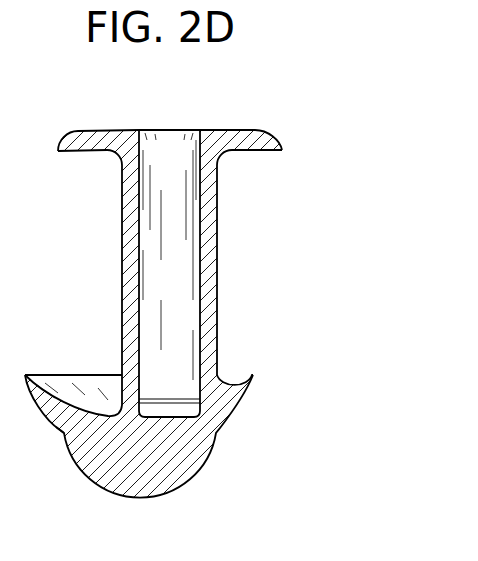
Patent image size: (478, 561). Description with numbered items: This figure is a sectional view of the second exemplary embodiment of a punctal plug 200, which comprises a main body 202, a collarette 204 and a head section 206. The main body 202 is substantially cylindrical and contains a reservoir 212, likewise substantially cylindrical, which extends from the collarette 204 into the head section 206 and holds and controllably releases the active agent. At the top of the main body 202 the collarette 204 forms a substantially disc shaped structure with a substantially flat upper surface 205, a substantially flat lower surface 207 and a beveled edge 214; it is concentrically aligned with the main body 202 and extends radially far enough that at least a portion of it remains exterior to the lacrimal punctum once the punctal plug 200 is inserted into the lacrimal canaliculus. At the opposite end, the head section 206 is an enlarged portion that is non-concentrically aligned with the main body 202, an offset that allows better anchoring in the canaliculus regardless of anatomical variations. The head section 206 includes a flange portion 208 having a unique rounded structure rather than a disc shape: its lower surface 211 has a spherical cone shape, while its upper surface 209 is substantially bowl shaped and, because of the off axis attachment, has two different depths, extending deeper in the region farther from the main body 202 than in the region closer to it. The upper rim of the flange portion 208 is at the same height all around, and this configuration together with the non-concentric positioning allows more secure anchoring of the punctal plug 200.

The punctal plug 200 is at (277, 293).
The main body 202 is at (122, 292).
The collarette 204 is at (110, 128).
The upper surface 205 is at (243, 128).
The head section 206 is at (262, 370).
The lower surface 207 is at (257, 153).
The flange portion 208 is at (29, 384).
The upper surface 209 is at (62, 387).
The lower surface 211 is at (55, 428).
The reservoir 212 is at (173, 260).
The beveled edge 214 is at (272, 138).